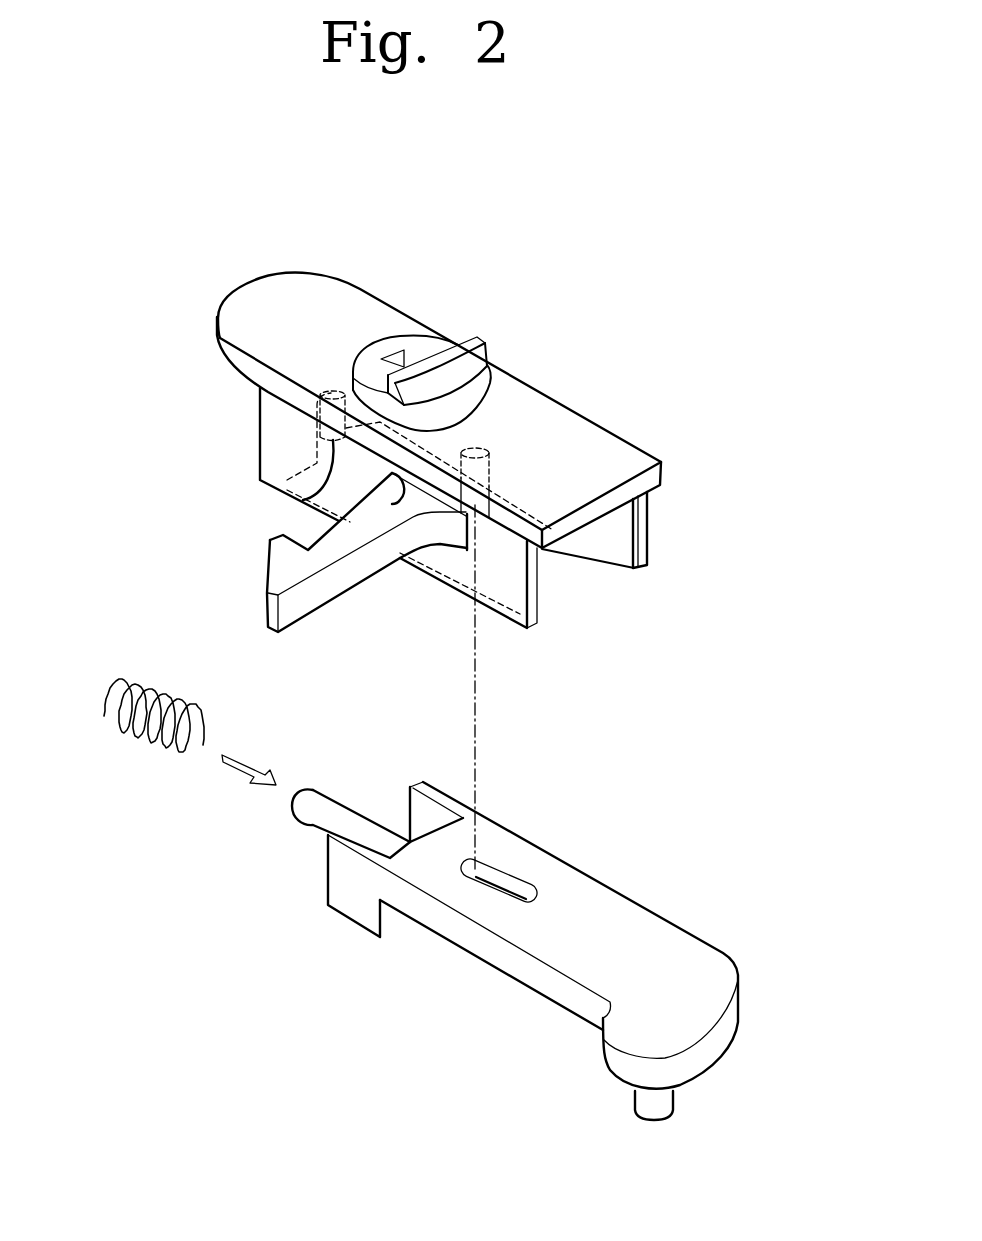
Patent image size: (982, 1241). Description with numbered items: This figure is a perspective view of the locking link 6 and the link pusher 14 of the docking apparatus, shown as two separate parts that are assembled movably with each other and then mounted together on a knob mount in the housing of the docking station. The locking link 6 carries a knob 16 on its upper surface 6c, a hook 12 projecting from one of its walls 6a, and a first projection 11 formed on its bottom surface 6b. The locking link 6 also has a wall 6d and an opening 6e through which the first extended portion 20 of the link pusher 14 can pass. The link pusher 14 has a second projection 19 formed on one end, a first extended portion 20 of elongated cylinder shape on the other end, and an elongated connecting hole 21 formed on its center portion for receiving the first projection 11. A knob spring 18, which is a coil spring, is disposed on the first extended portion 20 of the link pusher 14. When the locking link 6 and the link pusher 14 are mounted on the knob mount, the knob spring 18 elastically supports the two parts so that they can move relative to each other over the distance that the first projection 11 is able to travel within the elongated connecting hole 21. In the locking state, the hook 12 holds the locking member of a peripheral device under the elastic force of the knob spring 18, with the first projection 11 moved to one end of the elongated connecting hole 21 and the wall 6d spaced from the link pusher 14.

The locking link 6 is at (208, 362).
The wall 6a is at (510, 573).
The bottom surface 6b is at (565, 533).
The upper surface 6c is at (345, 307).
The wall 6d is at (276, 432).
The opening 6e is at (308, 491).
The first projection 11 is at (492, 474).
The hook 12 is at (357, 570).
The link pusher 14 is at (729, 951).
The knob 16 is at (468, 344).
The knob spring 18 is at (138, 735).
The second projection 19 is at (657, 1103).
The first extended portion 20 is at (311, 810).
The elongated connecting hole 21 is at (507, 878).